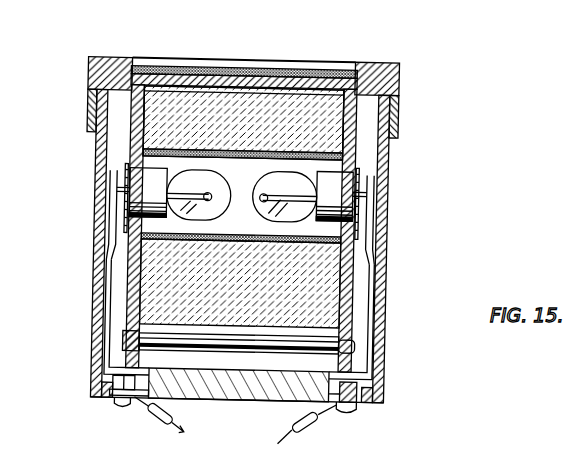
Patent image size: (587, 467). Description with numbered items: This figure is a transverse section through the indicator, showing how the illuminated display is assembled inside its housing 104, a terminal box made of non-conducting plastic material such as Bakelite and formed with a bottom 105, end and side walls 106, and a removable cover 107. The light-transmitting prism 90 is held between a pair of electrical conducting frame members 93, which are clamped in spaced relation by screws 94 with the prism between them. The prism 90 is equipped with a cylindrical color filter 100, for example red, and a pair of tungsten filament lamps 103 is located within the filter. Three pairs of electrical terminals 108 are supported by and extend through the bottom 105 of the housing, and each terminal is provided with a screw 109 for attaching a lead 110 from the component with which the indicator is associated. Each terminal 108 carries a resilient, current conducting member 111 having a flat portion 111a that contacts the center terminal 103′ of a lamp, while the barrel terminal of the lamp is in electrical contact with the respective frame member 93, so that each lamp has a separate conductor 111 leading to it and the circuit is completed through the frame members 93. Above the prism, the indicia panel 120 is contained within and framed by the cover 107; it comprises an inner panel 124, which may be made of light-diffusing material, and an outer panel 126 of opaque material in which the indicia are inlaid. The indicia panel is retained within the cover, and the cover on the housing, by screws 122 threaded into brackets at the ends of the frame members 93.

The indicia panel 120 is at (206, 46).
The screws 122 is at (161, 70).
The outer panel 126 is at (297, 70).
The removable cover 107 is at (86, 63).
The inner panel 124 is at (247, 88).
The prism 90 is at (273, 136).
The electrical conducting frame members 93 is at (130, 137).
The tungsten filament lamps 103 is at (268, 182).
The center terminal 103′ is at (118, 197).
The flat portion 111a is at (117, 224).
The housing 104 is at (83, 247).
The end and side walls 106 is at (100, 279).
The resilient current conducting member 111 is at (107, 322).
The cylindrical color filter 100 is at (233, 241).
The screws 94 is at (358, 351).
The bottom 105 is at (255, 400).
The electrical terminals 108 is at (102, 387).
The screw 109 is at (124, 407).
The lead 110 is at (162, 422).